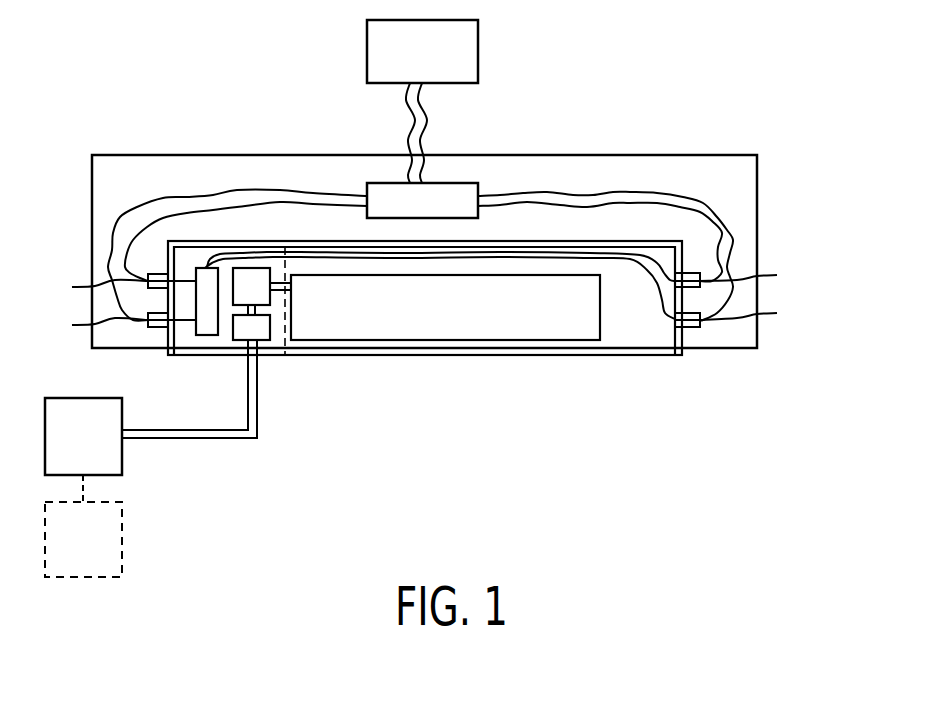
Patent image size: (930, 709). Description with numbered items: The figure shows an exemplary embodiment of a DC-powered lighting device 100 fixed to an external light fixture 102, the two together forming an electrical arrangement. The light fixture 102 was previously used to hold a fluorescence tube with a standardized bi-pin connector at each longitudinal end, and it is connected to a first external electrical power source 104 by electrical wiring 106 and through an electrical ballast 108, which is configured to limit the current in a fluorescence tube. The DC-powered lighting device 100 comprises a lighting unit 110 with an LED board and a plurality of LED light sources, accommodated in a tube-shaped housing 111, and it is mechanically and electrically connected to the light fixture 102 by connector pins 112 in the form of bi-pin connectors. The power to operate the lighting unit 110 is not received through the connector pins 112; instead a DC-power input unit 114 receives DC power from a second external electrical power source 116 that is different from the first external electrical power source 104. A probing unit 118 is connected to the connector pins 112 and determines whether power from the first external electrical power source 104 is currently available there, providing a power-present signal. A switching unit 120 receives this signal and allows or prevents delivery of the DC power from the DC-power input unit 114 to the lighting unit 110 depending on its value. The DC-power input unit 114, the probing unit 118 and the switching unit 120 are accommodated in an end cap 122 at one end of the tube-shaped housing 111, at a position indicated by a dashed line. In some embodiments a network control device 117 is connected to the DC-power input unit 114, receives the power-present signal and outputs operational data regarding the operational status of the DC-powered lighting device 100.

The DC-powered lighting device 100 is at (386, 412).
The external light fixture 102 is at (98, 149).
The first external electrical power source 104 is at (367, 52).
The electrical wiring 106 is at (396, 132).
The electrical ballast 108 is at (467, 183).
The lighting unit 110 is at (487, 342).
The tube-shaped housing 111 is at (553, 356).
The connector pins 112 is at (70, 280).
The DC-power input unit 114 is at (268, 341).
The second external electrical power source 116 is at (122, 468).
The network control device 117 is at (122, 555).
The probing unit 118 is at (207, 336).
The switching unit 120 is at (272, 301).
The end cap 122 is at (170, 353).